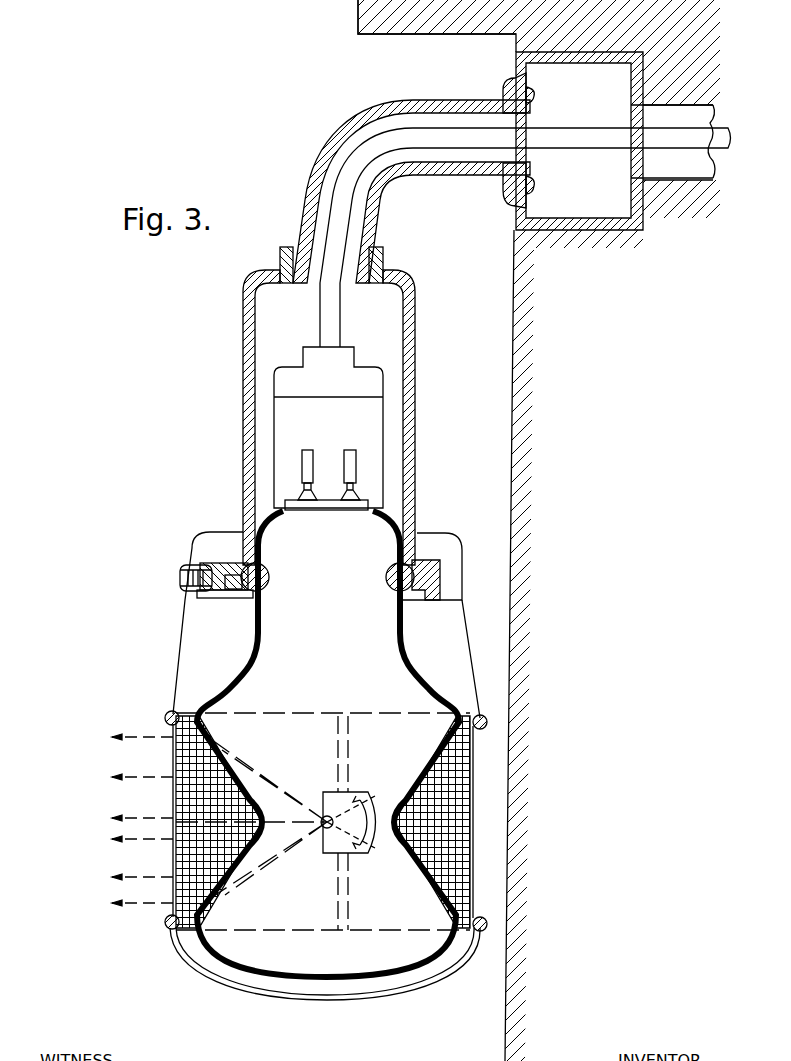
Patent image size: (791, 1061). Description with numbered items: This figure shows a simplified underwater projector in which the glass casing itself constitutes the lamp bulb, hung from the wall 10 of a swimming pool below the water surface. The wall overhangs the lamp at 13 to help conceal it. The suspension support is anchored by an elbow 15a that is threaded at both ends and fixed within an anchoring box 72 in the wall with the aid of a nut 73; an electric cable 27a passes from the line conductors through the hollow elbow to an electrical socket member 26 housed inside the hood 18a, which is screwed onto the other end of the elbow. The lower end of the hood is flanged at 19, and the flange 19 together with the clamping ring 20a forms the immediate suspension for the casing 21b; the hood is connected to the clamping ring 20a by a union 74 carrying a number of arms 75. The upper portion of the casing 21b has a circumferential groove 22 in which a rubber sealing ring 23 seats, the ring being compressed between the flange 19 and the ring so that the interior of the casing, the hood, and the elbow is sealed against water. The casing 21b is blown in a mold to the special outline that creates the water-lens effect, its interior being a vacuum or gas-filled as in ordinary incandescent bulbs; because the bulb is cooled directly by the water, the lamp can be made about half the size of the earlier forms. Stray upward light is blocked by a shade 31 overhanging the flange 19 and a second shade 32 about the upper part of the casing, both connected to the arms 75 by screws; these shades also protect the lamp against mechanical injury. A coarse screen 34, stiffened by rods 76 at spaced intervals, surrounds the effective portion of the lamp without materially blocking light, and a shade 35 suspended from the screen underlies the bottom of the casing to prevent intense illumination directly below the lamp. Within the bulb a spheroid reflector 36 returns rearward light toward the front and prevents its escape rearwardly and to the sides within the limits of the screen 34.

The wall 10 is at (516, 455).
The overhang 13 is at (446, 24).
The elbow 15a is at (372, 128).
The hood 18a is at (246, 412).
The flange 19 is at (230, 560).
The clamping ring 20a is at (238, 592).
The casing 21b is at (255, 650).
The circumferential groove 22 is at (266, 585).
The sealing ring 23 is at (267, 571).
The electrical socket member 26 is at (363, 378).
The electric cable 27a is at (573, 140).
The shade 31 is at (201, 545).
The second shade 32 is at (180, 654).
The screen 34 is at (177, 758).
The shade 35 is at (314, 999).
The reflector 36 is at (372, 798).
The anchoring box 72 is at (528, 74).
The nut 73 is at (534, 99).
The union 74 is at (226, 600).
The arms 75 is at (205, 592).
The stiffening rods 76 is at (472, 805).